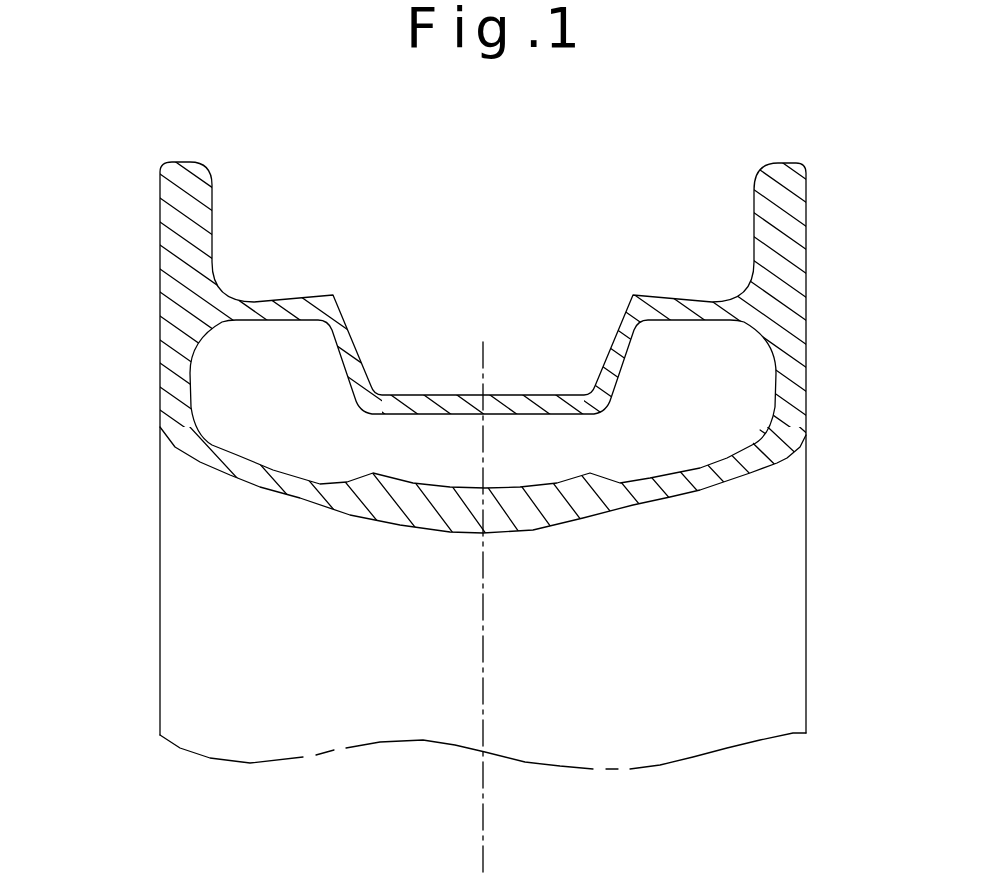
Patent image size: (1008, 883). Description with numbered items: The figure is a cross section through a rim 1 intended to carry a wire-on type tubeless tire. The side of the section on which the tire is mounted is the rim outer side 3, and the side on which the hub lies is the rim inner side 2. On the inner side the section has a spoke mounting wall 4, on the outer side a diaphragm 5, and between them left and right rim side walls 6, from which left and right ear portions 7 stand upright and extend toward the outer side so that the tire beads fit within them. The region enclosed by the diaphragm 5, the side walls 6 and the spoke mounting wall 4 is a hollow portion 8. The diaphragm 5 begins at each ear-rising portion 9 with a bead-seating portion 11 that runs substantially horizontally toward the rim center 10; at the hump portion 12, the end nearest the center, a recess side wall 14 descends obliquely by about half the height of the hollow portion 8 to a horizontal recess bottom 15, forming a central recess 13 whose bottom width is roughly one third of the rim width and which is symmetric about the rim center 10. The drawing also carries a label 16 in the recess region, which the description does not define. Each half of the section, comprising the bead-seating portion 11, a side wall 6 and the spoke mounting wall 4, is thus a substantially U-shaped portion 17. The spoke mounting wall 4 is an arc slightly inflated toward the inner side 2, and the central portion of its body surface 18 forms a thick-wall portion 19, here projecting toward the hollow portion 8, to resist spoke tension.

The rim 1 is at (767, 783).
The rim inner side 2 is at (367, 670).
The rim outer side 3 is at (489, 239).
The spoke mounting wall 4 is at (598, 508).
The diaphragm 5 is at (543, 370).
The rim side wall 6 is at (160, 255).
The ear portion 7 is at (168, 190).
The hollow portion 8 is at (675, 410).
The ear-rising portion 9 is at (223, 283).
The rim center 10 is at (486, 836).
The bead-seating portion 11 is at (275, 297).
The hump portion 12 is at (335, 295).
The recess 13 is at (508, 344).
The recess side wall 14 is at (353, 342).
The recess bottom 15 is at (418, 395).
The well side wall 16 is at (380, 392).
The substantially U-shaped portion 17 is at (223, 365).
The body surface 18 is at (457, 533).
The thick-wall portion 19 is at (397, 505).